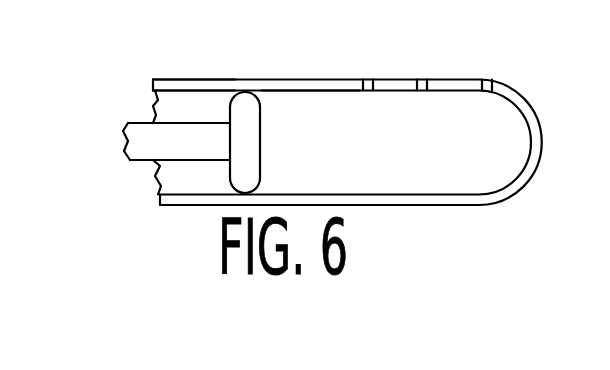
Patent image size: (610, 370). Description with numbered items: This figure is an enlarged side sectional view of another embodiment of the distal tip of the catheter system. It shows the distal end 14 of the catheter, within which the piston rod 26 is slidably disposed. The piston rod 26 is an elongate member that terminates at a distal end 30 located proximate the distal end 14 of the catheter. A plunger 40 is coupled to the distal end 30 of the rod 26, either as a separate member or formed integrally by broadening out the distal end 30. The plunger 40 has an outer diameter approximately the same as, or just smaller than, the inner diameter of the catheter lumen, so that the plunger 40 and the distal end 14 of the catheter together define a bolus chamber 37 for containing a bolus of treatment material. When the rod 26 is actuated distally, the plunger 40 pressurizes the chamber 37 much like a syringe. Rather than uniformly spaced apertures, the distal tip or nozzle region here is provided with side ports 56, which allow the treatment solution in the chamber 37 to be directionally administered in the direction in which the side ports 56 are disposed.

The distal end 14 is at (395, 205).
The piston rod 26 is at (144, 157).
The distal end 30 is at (172, 130).
The bolus chamber 37 is at (342, 118).
The plunger 40 is at (243, 107).
The side ports 56 is at (366, 87).